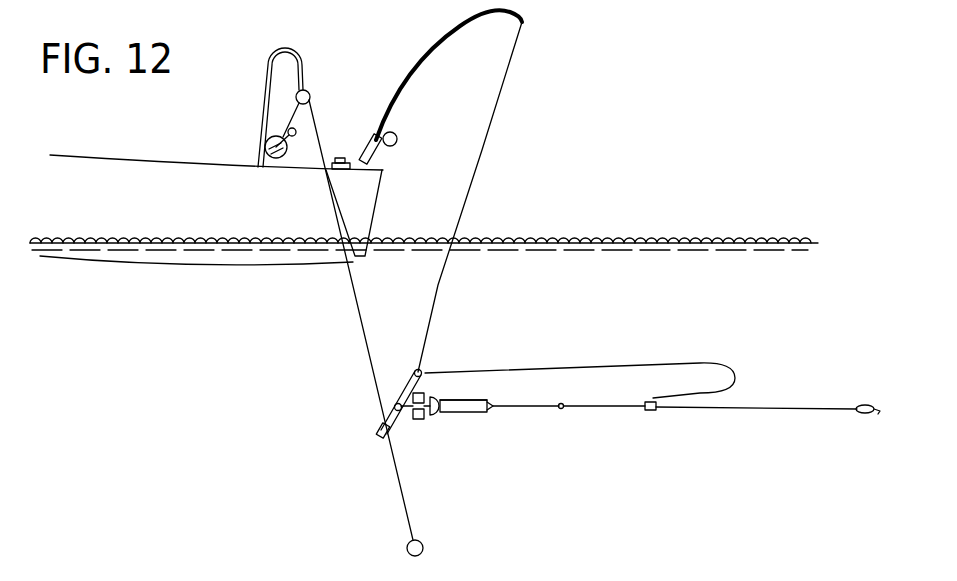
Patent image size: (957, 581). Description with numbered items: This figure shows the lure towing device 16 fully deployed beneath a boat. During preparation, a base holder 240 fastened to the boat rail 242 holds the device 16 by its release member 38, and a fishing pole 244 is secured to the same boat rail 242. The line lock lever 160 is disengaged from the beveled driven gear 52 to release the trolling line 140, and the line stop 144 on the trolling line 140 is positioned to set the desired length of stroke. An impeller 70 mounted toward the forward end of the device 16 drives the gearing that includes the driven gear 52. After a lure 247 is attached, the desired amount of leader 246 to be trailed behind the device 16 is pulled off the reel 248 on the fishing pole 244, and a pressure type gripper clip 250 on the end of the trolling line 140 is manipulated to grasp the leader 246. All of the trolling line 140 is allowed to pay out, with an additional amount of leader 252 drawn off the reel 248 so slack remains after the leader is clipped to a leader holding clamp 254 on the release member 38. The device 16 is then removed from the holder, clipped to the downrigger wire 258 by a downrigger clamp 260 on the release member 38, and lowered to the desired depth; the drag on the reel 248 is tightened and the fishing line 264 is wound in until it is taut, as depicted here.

The lure towing device 16 is at (457, 414).
The release member 38 is at (402, 388).
The beveled driven gear 52 is at (430, 388).
The impeller 70 is at (420, 421).
The trolling line 140 is at (594, 413).
The line stop 144 is at (561, 410).
The line lock lever 160 is at (463, 398).
The base holder 240 is at (347, 158).
The boat rail 242 is at (229, 167).
The fishing pole 244 is at (420, 80).
The leader 246 is at (774, 409).
The lure 247 is at (867, 404).
The reel 248 is at (397, 137).
The pressure type gripper clip 250 is at (647, 412).
The additional leader 252 is at (655, 363).
The leader holding clamp 254 is at (423, 372).
The downrigger wire 258 is at (353, 290).
The downrigger clamp 260 is at (378, 424).
The fishing line 264 is at (474, 180).